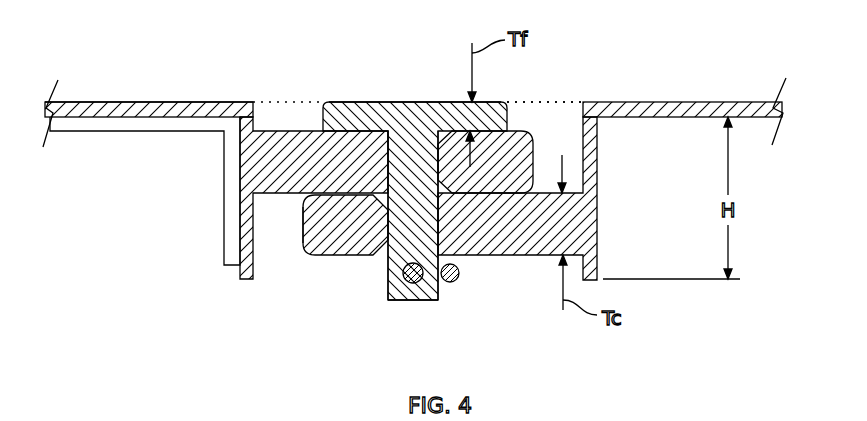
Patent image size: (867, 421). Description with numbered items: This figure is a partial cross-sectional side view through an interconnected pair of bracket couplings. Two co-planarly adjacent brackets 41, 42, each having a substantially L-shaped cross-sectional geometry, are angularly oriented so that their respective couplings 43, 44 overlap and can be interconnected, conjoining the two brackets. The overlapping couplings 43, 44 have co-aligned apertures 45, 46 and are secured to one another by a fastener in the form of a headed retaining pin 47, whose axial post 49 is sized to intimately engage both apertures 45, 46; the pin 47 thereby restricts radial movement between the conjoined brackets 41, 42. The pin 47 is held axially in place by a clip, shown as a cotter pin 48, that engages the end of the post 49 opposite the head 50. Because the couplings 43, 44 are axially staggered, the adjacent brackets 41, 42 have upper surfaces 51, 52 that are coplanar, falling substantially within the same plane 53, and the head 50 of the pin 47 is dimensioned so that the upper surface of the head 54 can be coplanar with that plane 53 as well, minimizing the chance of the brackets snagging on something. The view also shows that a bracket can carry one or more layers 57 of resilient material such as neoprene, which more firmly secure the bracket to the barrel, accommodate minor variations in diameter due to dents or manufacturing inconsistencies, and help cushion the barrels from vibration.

The bracket 41 is at (142, 112).
The bracket 42 is at (630, 117).
The coupling 43 is at (300, 130).
The coupling 44 is at (327, 257).
The aperture 45 is at (388, 157).
The aperture 46 is at (388, 223).
The headed retaining pin 47 is at (400, 147).
The cotter pin 48 is at (460, 275).
The axial post 49 is at (425, 300).
The head 50 is at (363, 108).
The upper surface 51 is at (190, 102).
The upper surface 52 is at (683, 102).
The plane 53 is at (548, 100).
The cap top surface 54 is at (400, 102).
The layer of resilient material 57 is at (165, 127).